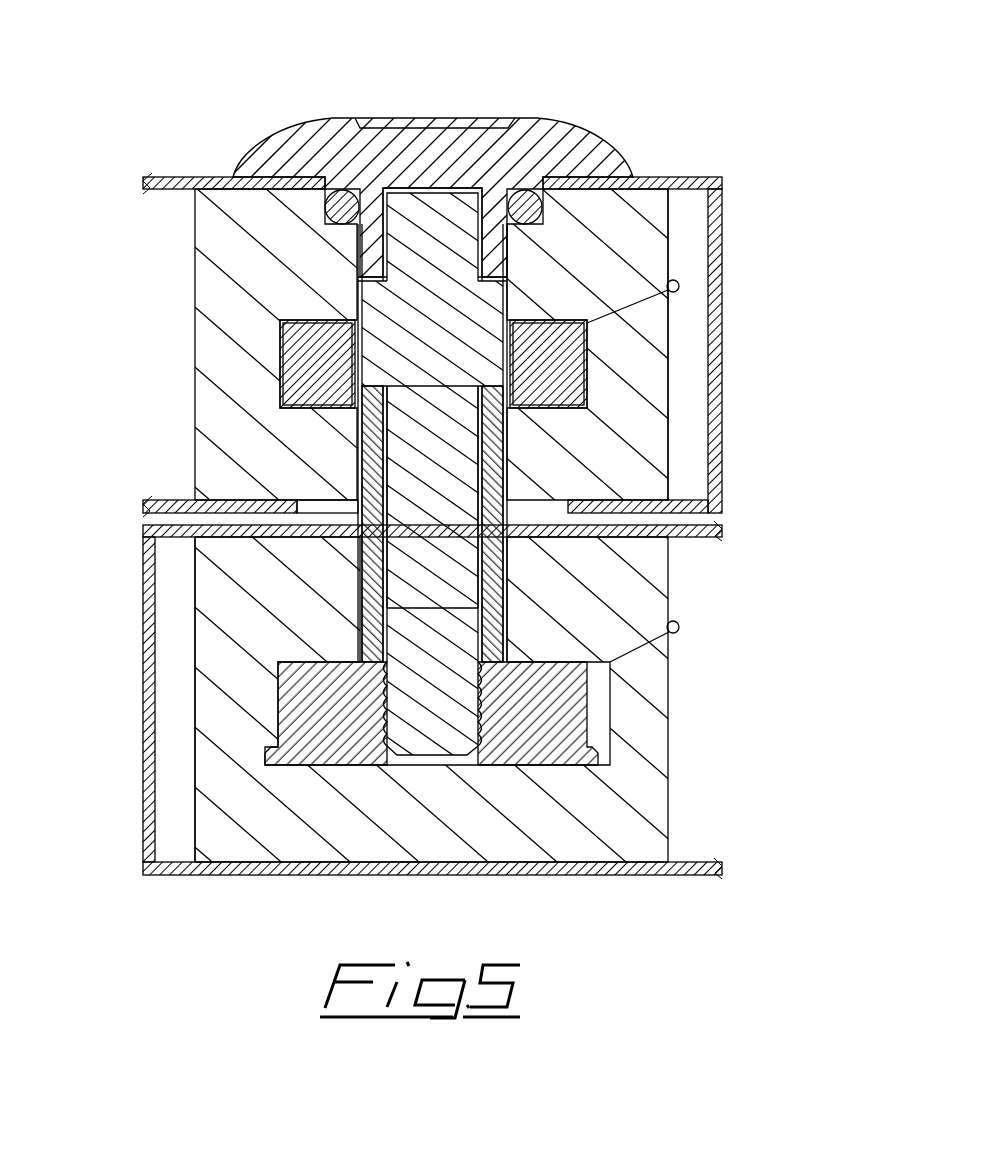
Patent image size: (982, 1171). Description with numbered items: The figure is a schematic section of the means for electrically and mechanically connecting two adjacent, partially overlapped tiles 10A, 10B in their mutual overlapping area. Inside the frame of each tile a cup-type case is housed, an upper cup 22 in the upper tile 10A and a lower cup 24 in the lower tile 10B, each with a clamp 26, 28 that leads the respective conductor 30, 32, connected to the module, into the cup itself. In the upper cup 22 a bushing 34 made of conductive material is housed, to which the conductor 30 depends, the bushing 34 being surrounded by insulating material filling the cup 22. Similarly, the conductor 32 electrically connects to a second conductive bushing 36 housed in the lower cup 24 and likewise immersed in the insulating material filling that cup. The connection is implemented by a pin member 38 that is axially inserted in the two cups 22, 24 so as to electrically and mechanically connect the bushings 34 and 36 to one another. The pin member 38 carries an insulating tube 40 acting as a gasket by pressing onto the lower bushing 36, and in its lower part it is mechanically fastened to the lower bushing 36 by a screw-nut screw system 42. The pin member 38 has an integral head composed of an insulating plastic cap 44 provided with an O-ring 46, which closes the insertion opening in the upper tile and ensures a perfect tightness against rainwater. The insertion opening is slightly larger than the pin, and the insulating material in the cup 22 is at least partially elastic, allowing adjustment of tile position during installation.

The tile 10A is at (722, 297).
The tile 10B is at (143, 613).
The upper cup 22 is at (643, 203).
The lower cup 24 is at (655, 575).
The clamp 26 is at (677, 282).
The clamp 28 is at (679, 627).
The conductor 30 is at (640, 302).
The conductor 32 is at (632, 648).
The bushing 34 is at (555, 378).
The second conductive bushing 36 is at (558, 739).
The pin member 38 is at (403, 523).
The insulating tube 40 is at (372, 473).
The screw-nut screw system 42 is at (432, 733).
The insulating plastic cap 44 is at (538, 133).
The O-ring 46 is at (342, 206).